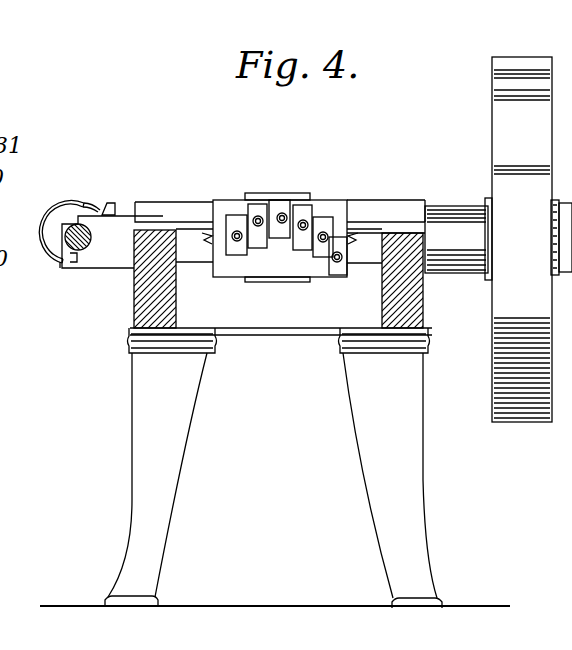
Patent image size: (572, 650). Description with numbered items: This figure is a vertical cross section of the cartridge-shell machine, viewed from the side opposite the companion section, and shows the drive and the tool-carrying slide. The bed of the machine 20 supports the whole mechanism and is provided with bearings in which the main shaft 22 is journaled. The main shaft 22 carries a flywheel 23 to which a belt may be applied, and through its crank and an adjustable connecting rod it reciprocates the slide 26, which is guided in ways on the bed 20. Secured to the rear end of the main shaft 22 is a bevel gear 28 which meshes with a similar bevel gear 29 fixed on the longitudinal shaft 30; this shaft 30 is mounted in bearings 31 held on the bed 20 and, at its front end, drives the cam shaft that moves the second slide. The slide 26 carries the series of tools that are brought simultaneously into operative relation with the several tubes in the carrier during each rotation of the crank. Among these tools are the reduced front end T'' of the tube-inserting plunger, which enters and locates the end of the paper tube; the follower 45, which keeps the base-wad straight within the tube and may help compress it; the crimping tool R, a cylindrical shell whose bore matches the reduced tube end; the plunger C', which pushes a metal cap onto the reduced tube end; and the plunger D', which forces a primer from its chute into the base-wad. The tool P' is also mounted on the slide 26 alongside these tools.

The bed of the machine 20 is at (134, 303).
The main shaft 22 is at (451, 216).
The flywheel 23 is at (500, 134).
The slide 26 is at (263, 263).
The bevel gear 28 is at (109, 204).
The bevel gear 29 is at (68, 204).
The longitudinal shaft 30 is at (66, 232).
The bearings 31 is at (59, 269).
The follower 45 is at (326, 233).
The plunger D' is at (229, 210).
The punch P' is at (255, 206).
The plunger C' is at (282, 201).
The crimping tool R is at (305, 221).
The reduced front end T'' is at (353, 274).